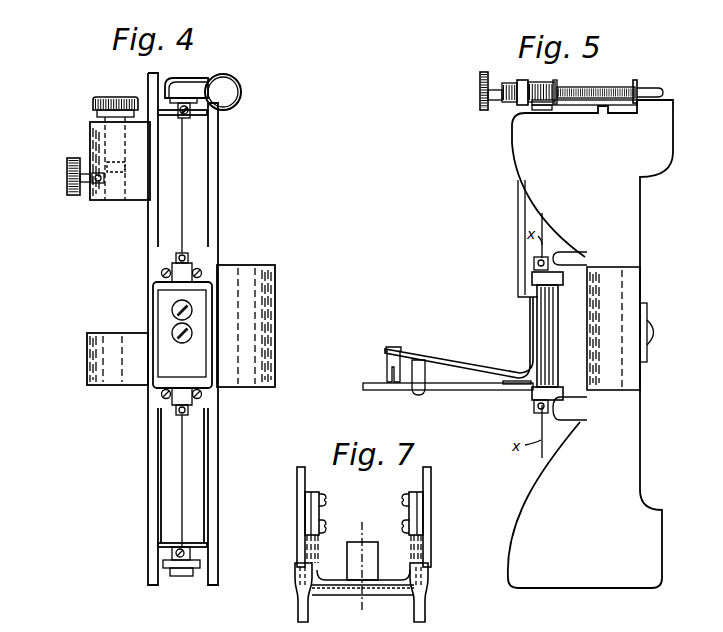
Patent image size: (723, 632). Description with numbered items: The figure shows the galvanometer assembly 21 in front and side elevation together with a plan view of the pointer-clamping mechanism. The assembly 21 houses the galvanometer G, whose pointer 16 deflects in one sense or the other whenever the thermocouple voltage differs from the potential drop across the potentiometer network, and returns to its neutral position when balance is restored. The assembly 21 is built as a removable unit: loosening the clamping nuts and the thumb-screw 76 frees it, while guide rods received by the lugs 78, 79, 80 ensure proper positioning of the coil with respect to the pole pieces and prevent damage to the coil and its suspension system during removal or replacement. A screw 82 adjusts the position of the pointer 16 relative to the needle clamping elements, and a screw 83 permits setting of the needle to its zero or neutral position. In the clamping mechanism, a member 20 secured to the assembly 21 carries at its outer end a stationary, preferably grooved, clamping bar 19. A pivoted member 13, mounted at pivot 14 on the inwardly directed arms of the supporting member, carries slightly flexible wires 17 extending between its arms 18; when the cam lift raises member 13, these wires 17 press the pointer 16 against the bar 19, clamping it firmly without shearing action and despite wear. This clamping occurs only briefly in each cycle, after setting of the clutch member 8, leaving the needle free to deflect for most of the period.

In FIG. 7, the clutch member 8 is at (362, 522).
In FIG. 7, the member 13 is at (431, 520).
In FIG. 7, the pivot 14 is at (297, 481).
In FIG. 5, the galvanometer pointer 16 is at (440, 392).
In FIG. 7, the wires 17 is at (391, 579).
In FIG. 7, the arms 18 is at (296, 608).
In FIG. 5, the stationary clamping bar 19 is at (386, 365).
In FIG. 5, the member 20 is at (440, 353).
In FIG. 5, the galvanometer assembly 21 is at (512, 150).
In FIG. 4, the thumb-screw 76 is at (67, 176).
In FIG. 4, the lug 78 is at (96, 200).
In FIG. 4, the lug 79 is at (87, 352).
In FIG. 4, the lug 80 is at (270, 322).
In FIG. 4, the screw 82 is at (107, 96).
In FIG. 4, the screw 83 is at (241, 89).
In FIG. 5, the screw 83 is at (480, 95).
In FIG. 5, the galvanometer G is at (545, 318).